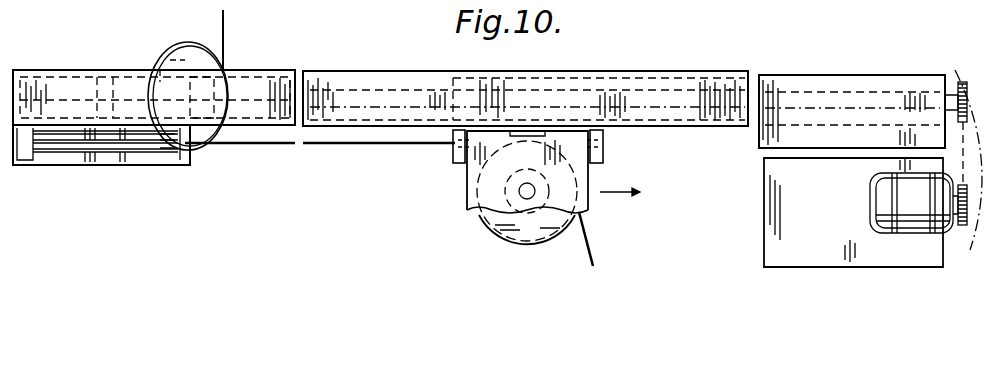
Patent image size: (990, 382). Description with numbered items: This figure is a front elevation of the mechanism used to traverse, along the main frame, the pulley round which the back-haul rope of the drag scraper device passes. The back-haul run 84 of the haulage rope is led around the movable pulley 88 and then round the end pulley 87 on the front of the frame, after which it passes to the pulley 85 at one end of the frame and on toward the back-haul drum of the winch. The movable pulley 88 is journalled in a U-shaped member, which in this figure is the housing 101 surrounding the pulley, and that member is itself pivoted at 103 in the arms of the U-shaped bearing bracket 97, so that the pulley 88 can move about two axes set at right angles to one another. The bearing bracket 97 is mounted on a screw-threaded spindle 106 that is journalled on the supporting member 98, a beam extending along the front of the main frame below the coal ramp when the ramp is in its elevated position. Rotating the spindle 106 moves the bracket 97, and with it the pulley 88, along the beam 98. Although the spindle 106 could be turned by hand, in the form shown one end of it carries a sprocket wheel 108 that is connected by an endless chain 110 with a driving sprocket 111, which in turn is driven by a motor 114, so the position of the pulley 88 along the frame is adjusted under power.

The back-haul run 84 is at (225, 22).
The pulley 85 is at (176, 48).
The end pulley 87 is at (148, 152).
The movable pulley 88 is at (480, 229).
The bearing bracket 97 is at (470, 75).
The supporting member 98 is at (717, 128).
The pulley housing 101 is at (467, 197).
The pivot 103 is at (458, 149).
The screw-threaded spindle 106 is at (618, 86).
The sprocket wheel 108 is at (960, 74).
The endless chain 110 is at (967, 170).
The driving sprocket 111 is at (955, 230).
The motor 114 is at (870, 204).